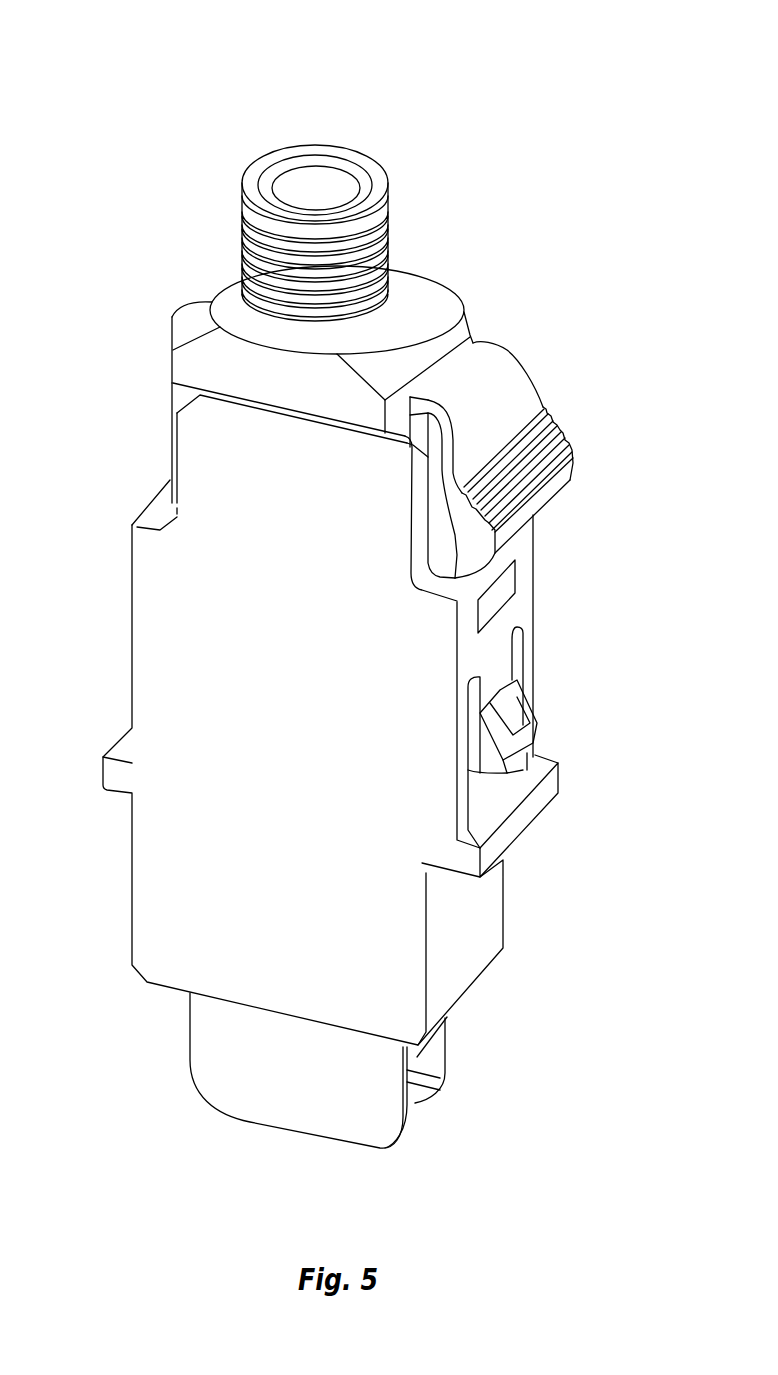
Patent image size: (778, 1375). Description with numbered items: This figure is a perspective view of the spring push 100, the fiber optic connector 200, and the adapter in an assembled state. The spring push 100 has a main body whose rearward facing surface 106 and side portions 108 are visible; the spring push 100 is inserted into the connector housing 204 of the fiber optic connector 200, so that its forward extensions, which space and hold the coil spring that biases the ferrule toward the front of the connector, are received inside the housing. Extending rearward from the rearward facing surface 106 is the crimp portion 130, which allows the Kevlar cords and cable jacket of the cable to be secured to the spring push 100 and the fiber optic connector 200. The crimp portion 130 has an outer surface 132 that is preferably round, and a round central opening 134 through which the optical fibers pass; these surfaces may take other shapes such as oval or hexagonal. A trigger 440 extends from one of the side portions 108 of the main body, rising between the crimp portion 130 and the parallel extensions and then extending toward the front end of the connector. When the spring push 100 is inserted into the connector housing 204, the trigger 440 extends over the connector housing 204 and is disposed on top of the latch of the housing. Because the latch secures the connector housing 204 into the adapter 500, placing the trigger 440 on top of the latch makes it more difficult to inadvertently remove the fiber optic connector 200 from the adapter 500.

The spring push 100 is at (233, 100).
The rearward facing surface 106 is at (225, 293).
The side portions 108 is at (187, 368).
The crimp portion 130 is at (380, 163).
The outer surface 132 is at (388, 233).
The central opening 134 is at (314, 190).
The fiber optic connector 200 is at (583, 347).
The connector housing 204 is at (170, 463).
The trigger 440 is at (573, 463).
The adapter 500 is at (413, 932).